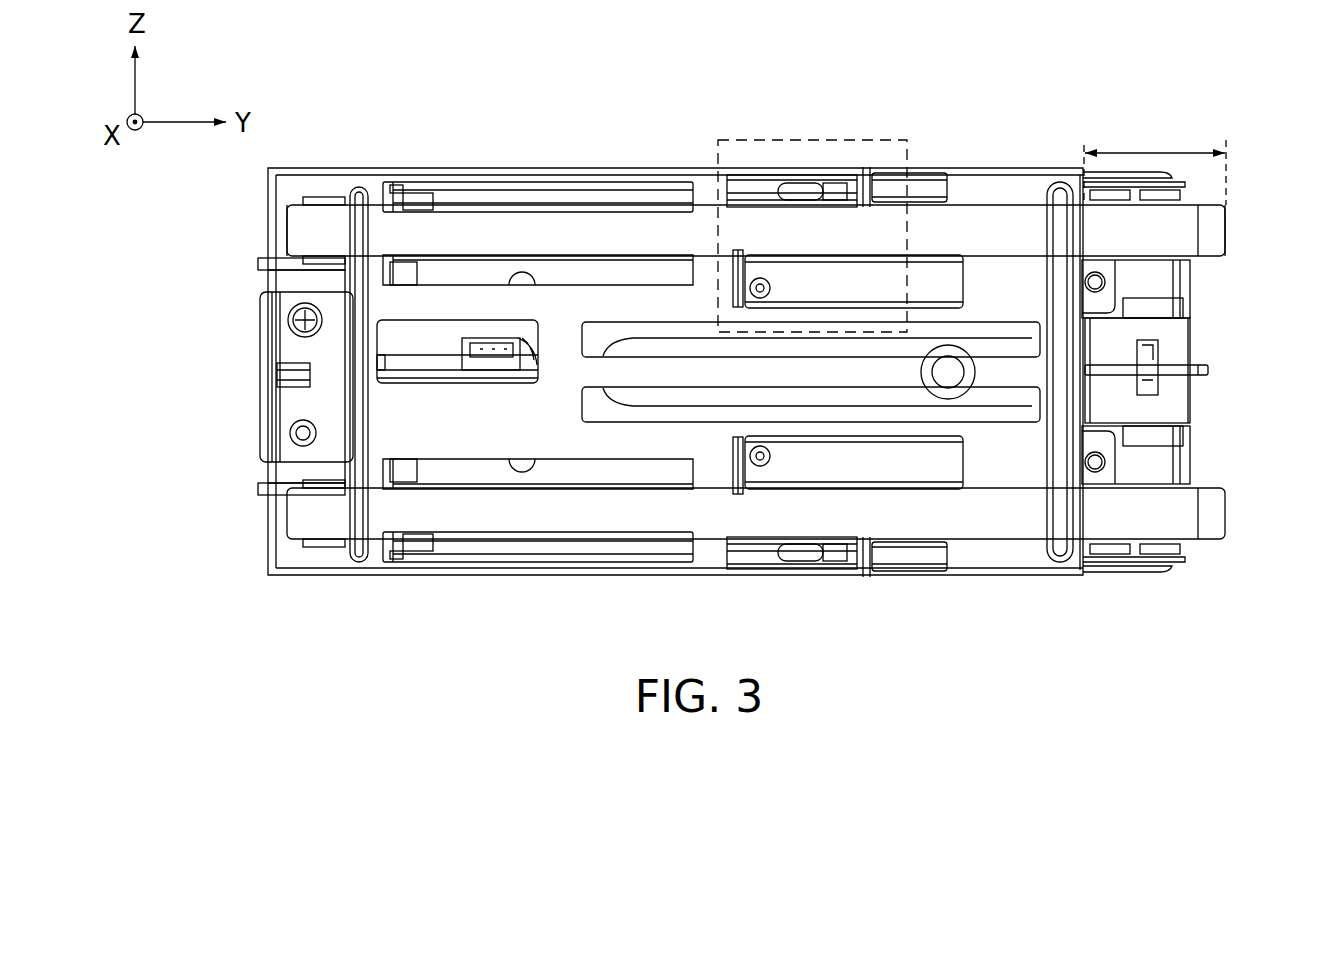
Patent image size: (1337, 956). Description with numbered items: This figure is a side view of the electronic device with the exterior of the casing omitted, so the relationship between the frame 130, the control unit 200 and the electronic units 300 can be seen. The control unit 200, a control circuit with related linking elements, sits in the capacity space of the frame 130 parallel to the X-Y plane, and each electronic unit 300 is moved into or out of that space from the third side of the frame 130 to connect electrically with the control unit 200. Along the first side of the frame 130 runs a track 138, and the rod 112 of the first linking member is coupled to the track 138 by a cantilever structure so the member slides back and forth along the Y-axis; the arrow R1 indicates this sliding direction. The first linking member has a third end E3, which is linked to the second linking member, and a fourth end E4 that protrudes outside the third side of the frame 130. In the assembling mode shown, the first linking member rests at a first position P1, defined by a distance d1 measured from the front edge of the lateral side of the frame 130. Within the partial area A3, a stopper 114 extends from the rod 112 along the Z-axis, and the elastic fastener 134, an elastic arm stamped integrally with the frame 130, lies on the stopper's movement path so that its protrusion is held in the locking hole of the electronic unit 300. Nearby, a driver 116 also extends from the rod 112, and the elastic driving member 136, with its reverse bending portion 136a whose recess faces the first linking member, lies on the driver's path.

The rod 112 is at (967, 227).
The stopper 114 is at (738, 262).
The driver 116 is at (865, 185).
The frame 130 is at (603, 442).
The elastic fastener 134 is at (803, 292).
The elastic driving member 136 is at (883, 190).
The reverse bending portion 136a is at (832, 186).
The track 138 is at (477, 208).
The control unit 200 is at (1210, 368).
The electronic unit 300 is at (1155, 283).
The third end E3 is at (325, 238).
The fourth end E4 is at (1208, 196).
The first position P1 is at (1228, 226).
The first direction R1 is at (1018, 105).
The partial area A3 is at (767, 138).
The distance d1 is at (1155, 160).